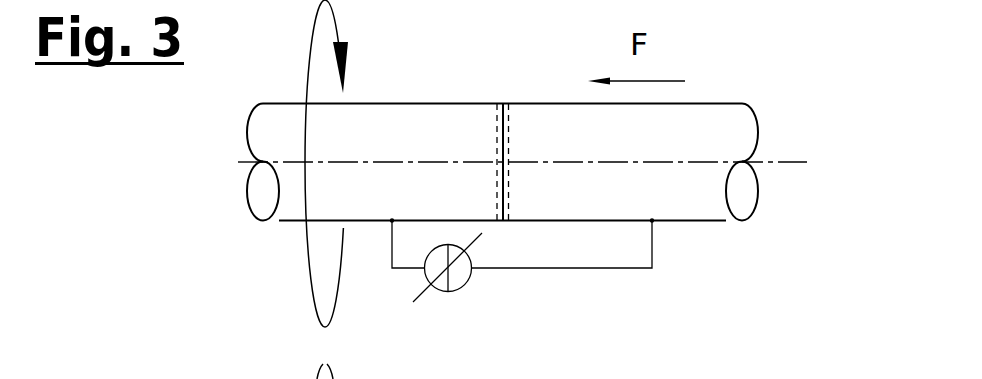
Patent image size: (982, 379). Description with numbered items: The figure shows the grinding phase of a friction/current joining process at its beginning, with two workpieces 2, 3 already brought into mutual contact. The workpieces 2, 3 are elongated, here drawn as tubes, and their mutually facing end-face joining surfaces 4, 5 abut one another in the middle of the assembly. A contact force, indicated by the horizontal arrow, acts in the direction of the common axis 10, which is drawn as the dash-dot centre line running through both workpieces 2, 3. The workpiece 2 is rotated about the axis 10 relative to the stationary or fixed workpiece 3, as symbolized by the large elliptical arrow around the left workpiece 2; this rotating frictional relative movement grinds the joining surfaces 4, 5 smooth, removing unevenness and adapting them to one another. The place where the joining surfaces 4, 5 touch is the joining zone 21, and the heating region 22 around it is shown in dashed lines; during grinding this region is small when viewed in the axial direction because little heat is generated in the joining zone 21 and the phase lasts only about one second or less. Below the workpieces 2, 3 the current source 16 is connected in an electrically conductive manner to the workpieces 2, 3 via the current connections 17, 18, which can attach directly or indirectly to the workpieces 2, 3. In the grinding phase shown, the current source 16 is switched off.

The workpiece 2 is at (421, 124).
The workpiece 3 is at (560, 121).
The joining surface 4 is at (443, 162).
The joining surface 5 is at (443, 162).
The joining zone 21 is at (502, 181).
The axis 10 is at (777, 162).
The current source 16 is at (462, 284).
The current connection 17 is at (392, 220).
The current connection 18 is at (652, 220).
The heating region 22 is at (509, 202).